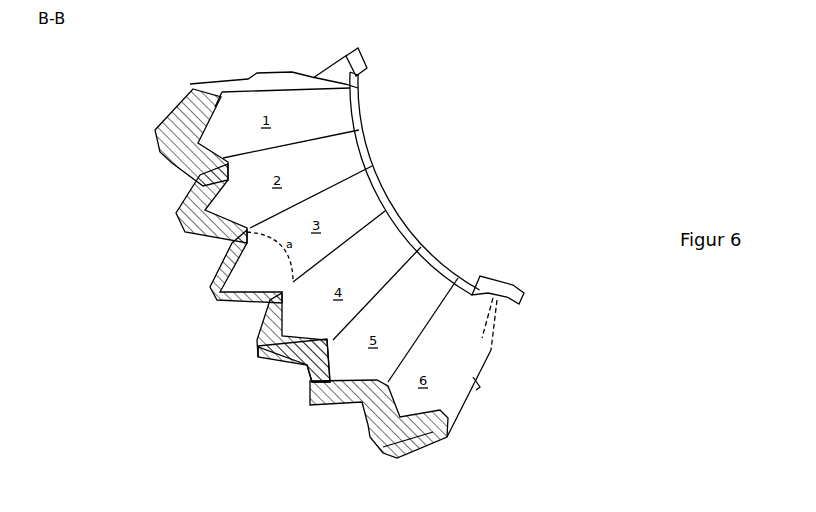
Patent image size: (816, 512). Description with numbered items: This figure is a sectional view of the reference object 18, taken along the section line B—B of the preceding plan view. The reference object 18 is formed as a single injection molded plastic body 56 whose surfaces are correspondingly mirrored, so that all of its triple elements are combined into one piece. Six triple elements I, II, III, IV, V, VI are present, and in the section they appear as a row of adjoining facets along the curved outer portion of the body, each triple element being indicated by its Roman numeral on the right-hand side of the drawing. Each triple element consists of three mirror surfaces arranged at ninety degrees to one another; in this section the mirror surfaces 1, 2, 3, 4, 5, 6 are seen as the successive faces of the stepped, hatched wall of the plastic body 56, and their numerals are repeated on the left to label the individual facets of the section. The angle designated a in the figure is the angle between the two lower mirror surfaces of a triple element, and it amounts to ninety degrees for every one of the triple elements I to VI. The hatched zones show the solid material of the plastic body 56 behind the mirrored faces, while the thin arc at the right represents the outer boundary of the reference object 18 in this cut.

The injection molded plastic body 56 is at (205, 92).
The mirror surface 1 is at (217, 100).
The mirror surface 2 is at (218, 192).
The mirror surface 3 is at (218, 253).
The mirror surface 4 is at (258, 312).
The mirror surface 5 is at (333, 367).
The mirror surface 6 is at (380, 410).
The reference object 18 is at (448, 86).
The triple element I is at (328, 108).
The triple element II is at (326, 167).
The triple element III is at (333, 215).
The triple element IV is at (365, 270).
The triple element V is at (387, 322).
The triple element VI is at (437, 358).